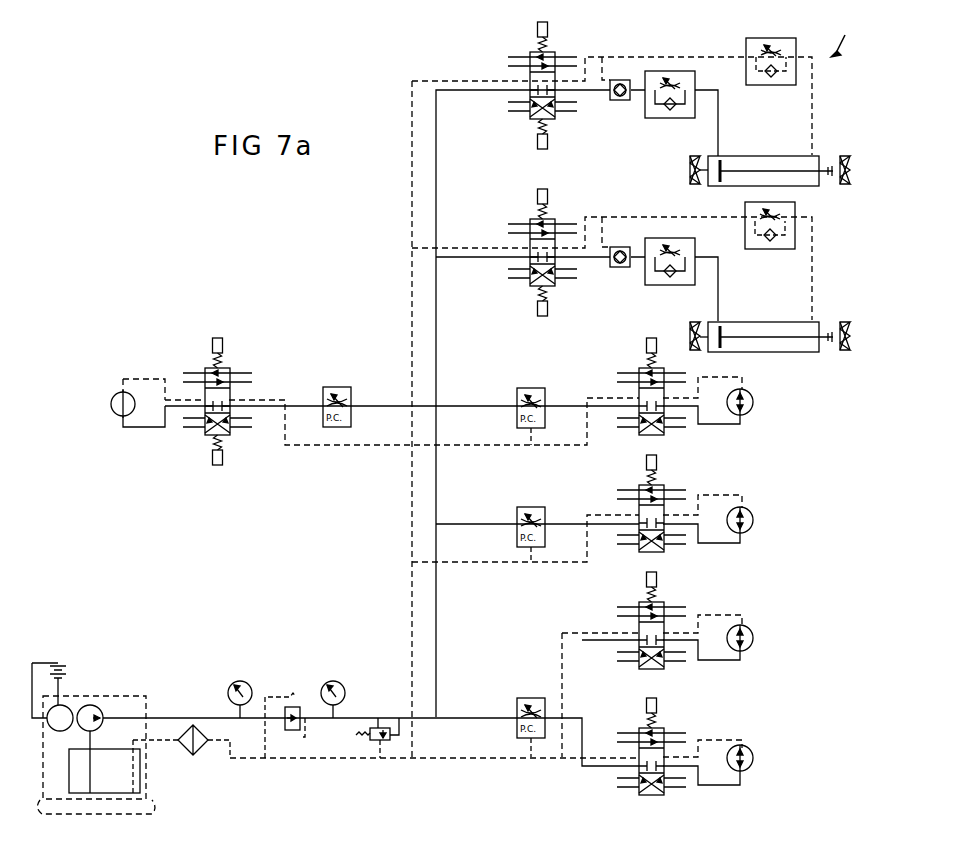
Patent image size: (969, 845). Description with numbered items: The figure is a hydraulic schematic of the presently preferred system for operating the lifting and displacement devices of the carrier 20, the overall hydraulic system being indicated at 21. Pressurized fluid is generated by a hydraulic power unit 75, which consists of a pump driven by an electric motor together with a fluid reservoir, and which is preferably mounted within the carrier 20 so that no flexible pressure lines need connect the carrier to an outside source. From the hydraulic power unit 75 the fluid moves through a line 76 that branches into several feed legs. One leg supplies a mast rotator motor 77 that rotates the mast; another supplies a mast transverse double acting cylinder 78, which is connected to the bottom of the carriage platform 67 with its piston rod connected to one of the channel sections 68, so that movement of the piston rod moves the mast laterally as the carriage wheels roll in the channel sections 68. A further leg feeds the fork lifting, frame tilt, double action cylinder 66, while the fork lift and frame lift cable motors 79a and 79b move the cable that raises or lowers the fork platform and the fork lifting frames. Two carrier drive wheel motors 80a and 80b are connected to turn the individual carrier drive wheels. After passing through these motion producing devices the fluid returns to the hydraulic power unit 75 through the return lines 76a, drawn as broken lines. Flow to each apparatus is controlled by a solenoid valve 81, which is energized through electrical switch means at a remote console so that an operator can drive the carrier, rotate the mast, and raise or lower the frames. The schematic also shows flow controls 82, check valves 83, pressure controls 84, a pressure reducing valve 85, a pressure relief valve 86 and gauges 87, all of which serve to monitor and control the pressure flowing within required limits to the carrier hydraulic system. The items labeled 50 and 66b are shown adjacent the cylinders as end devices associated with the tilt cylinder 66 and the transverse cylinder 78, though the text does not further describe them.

The carrier 20 is at (106, 814).
The hydraulic system 21 is at (846, 33).
The limit switch 50 is at (846, 322).
The fork lifting, frame tilt, double action cylinder 66 is at (736, 322).
The limit switch 66b is at (690, 338).
The carriage platform 67 is at (690, 170).
The channel sections 68 is at (846, 156).
The hydraulic power unit 75 is at (83, 696).
The line 76 is at (436, 214).
The return lines 76a is at (459, 760).
The mast rotator motor 77 is at (137, 379).
The mast transverse double acting cylinder 78 is at (750, 156).
The fork lift cable motor 79a is at (748, 378).
The frame lift cable motor 79b is at (748, 500).
The carrier drive wheel motor 80a is at (746, 616).
The carrier drive wheel motor 80b is at (746, 738).
The solenoid valve 81 is at (534, 54).
The flow controls 82 is at (665, 118).
The check valves 83 is at (618, 78).
The pressure controls 84 is at (527, 699).
The pressure reducing valve 85 is at (293, 732).
The pressure relief valve 86 is at (380, 742).
The gauges 87 is at (232, 680).